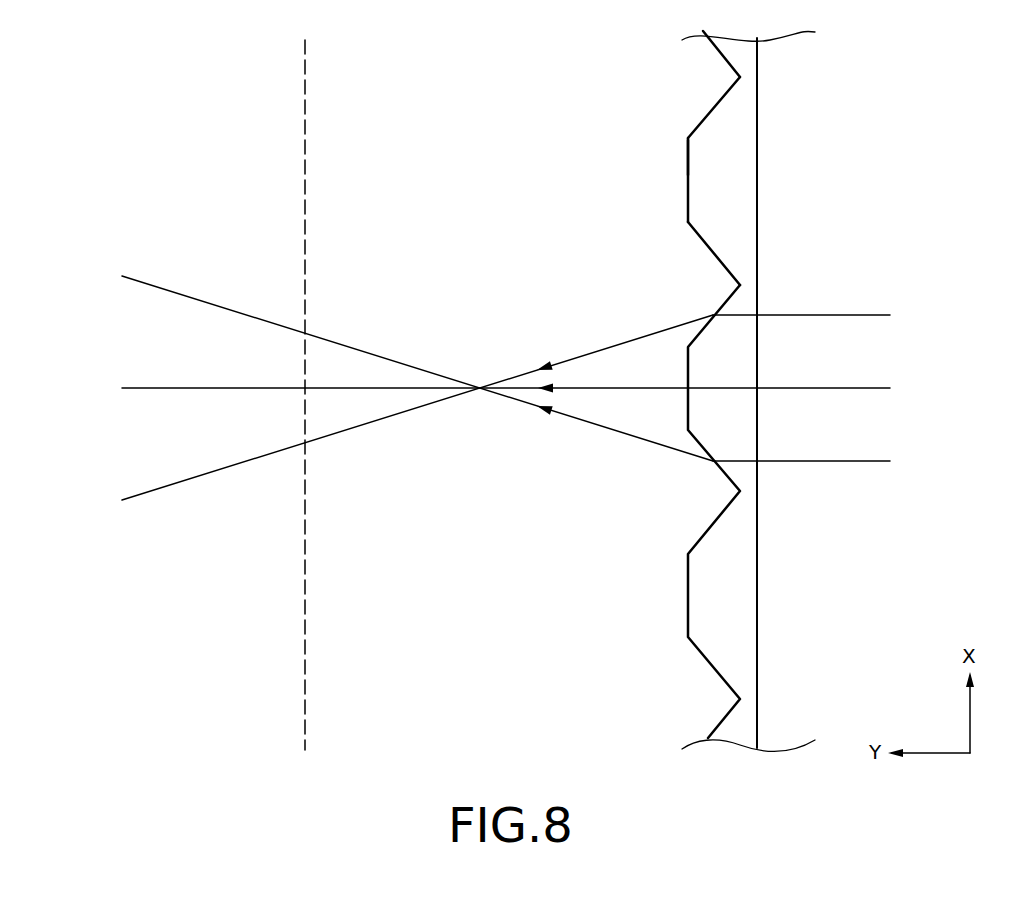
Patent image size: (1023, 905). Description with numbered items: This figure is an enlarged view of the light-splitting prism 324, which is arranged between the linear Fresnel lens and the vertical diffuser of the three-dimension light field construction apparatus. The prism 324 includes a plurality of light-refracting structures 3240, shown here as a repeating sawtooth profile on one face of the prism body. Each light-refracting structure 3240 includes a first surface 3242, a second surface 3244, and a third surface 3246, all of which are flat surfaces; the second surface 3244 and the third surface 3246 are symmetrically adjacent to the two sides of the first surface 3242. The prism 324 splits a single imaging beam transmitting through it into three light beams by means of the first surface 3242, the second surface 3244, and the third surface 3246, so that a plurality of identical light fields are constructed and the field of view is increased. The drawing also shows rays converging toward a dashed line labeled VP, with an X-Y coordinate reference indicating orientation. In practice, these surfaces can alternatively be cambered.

The light-splitting prism 324 is at (722, 391).
The light-refracting structure 3240 is at (712, 156).
The first surface 3242 is at (686, 181).
The second surface 3244 is at (715, 100).
The third surface 3246 is at (712, 254).
The viewpoint plane VP is at (305, 114).